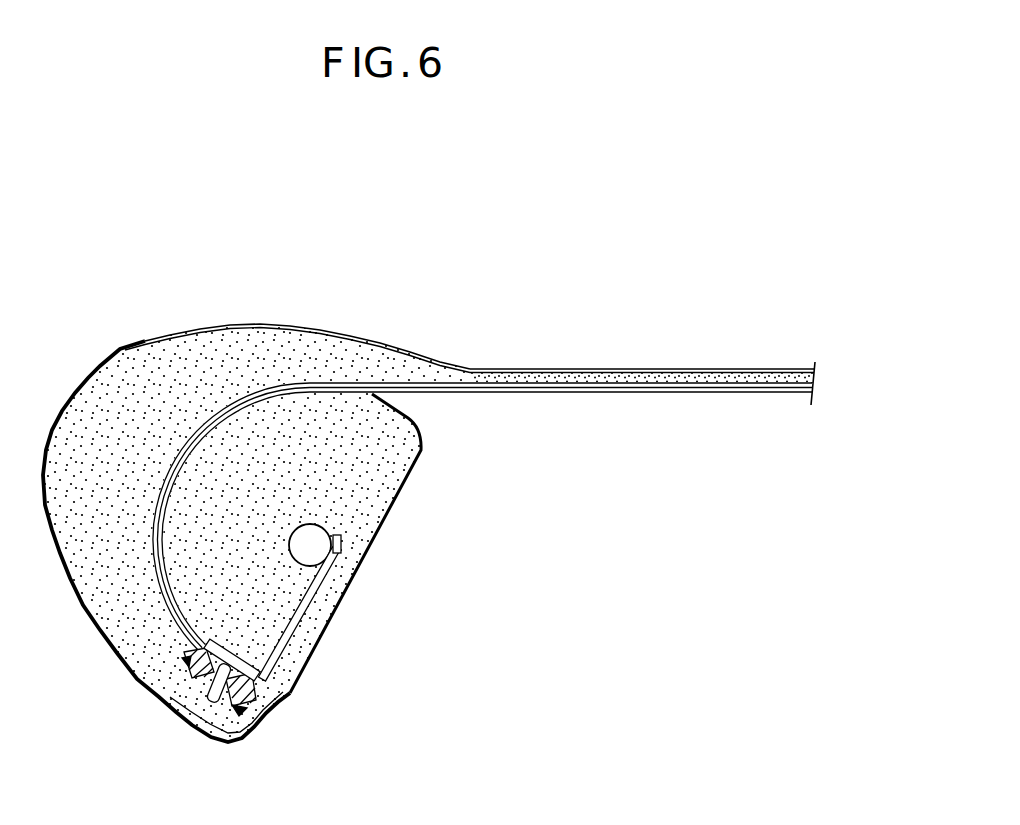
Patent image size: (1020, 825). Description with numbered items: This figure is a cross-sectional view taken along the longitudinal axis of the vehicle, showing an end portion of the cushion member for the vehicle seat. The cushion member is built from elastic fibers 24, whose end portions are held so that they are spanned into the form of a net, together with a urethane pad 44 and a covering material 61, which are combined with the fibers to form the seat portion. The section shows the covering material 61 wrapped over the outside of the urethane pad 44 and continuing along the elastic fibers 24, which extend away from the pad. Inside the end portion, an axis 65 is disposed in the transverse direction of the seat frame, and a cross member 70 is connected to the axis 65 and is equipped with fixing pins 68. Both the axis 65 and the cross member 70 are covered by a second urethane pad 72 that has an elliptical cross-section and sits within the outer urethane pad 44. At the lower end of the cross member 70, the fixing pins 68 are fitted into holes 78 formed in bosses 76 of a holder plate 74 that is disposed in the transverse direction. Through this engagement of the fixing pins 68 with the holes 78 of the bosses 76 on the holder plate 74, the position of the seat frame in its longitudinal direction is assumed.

The elastic fiber 24 is at (572, 383).
The urethane pad 44 is at (173, 367).
The covering material 61 is at (266, 327).
The axis 65 is at (313, 543).
The fixing pin 68 is at (208, 705).
The cross member 70 is at (279, 648).
The urethane pad 72 is at (408, 463).
The holder plate 74 is at (262, 716).
The boss 76 is at (230, 705).
The hole 78 is at (205, 693).